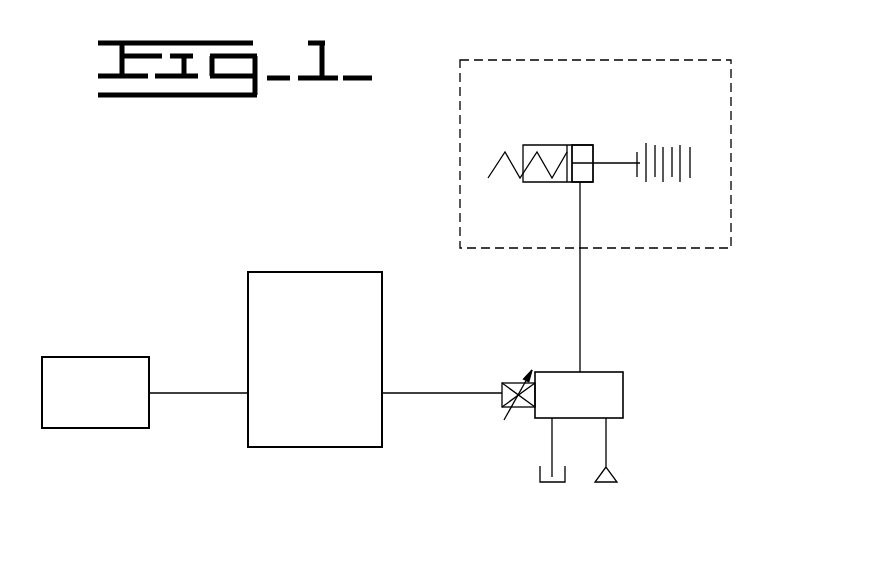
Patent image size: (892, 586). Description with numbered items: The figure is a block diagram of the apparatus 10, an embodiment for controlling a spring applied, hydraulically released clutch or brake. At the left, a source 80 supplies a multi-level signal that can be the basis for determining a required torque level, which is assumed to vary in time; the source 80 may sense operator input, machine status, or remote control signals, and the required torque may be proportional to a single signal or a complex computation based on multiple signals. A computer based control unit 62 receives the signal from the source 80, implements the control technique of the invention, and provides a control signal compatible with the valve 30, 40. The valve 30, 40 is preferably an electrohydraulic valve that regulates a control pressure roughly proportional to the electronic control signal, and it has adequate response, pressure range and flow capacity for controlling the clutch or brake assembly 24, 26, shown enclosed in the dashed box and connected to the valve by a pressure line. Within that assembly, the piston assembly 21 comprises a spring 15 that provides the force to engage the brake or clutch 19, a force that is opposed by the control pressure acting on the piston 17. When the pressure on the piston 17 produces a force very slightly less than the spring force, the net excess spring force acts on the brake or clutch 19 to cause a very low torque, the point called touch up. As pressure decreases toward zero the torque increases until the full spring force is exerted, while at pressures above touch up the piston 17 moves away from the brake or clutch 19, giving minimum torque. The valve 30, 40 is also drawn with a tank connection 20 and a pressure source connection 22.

The apparatus 10 is at (175, 182).
The spring 15 is at (523, 181).
The piston 17 is at (578, 155).
The brake or clutch 19 is at (680, 182).
The tank 20 is at (540, 467).
The piston assembly 21 is at (562, 123).
The pressure source 22 is at (613, 477).
The clutch or brake assembly 24 is at (606, 126).
The clutch or brake assembly 26 is at (602, 58).
The valve 30 is at (633, 374).
The valve 40 is at (620, 372).
The computer based control unit 62 is at (318, 272).
The source of a multi-level signal 80 is at (98, 357).